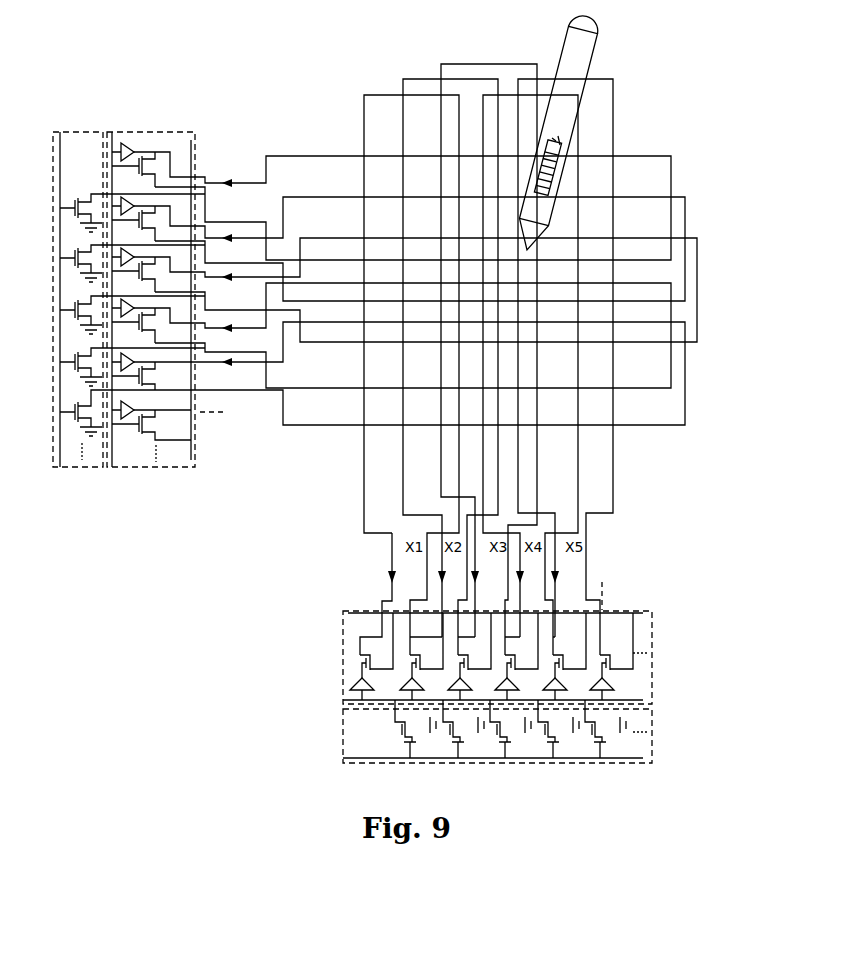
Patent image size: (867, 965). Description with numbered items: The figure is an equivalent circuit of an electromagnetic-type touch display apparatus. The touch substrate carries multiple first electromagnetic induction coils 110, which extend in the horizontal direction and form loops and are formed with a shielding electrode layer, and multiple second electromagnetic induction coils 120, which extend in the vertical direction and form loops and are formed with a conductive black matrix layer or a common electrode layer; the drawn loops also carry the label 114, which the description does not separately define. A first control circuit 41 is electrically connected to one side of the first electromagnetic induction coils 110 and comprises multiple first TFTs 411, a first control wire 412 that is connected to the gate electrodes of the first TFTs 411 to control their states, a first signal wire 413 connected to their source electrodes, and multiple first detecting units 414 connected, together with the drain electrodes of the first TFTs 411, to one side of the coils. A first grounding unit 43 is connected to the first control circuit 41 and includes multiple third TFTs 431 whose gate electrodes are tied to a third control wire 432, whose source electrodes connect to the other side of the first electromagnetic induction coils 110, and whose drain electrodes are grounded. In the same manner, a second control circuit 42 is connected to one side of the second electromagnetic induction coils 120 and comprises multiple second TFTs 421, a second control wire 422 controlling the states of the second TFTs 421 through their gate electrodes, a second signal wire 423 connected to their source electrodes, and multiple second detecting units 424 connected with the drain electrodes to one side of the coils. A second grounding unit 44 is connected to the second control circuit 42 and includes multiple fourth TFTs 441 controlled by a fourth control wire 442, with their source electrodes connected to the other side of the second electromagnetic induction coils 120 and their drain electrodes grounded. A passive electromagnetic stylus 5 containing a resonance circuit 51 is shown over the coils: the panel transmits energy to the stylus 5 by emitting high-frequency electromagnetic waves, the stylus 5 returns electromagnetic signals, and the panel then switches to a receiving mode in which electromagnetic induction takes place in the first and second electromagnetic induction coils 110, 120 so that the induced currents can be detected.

The passive electromagnetic stylus 5 is at (578, 65).
The resonance circuit 51 is at (557, 160).
The first electromagnetic induction coils 110 is at (700, 258).
The second electromagnetic induction coils 120 is at (462, 63).
The column electrode loop end 114 is at (613, 487).
The first control circuit 41 is at (143, 468).
The first TFTs 411 is at (140, 158).
The first control wire 412 is at (112, 467).
The first signal wire 413 is at (191, 460).
The first detecting units 414 is at (122, 145).
The first grounding unit 43 is at (80, 132).
The third TFTs 431 is at (73, 205).
The third control wire 432 is at (60, 467).
The second control circuit 42 is at (652, 668).
The second TFTs 421 is at (360, 668).
The second control wire 422 is at (643, 700).
The second signal wire 423 is at (643, 617).
The second detecting units 424 is at (350, 688).
The second grounding unit 44 is at (343, 738).
The fourth TFTs 441 is at (407, 740).
The fourth control wire 442 is at (643, 757).